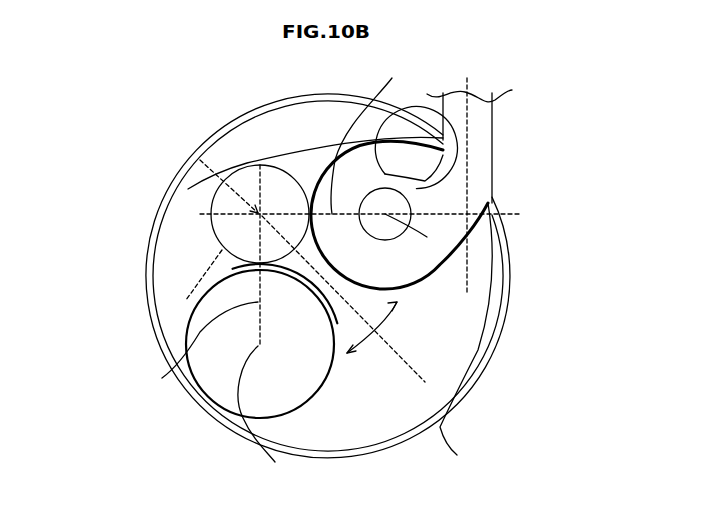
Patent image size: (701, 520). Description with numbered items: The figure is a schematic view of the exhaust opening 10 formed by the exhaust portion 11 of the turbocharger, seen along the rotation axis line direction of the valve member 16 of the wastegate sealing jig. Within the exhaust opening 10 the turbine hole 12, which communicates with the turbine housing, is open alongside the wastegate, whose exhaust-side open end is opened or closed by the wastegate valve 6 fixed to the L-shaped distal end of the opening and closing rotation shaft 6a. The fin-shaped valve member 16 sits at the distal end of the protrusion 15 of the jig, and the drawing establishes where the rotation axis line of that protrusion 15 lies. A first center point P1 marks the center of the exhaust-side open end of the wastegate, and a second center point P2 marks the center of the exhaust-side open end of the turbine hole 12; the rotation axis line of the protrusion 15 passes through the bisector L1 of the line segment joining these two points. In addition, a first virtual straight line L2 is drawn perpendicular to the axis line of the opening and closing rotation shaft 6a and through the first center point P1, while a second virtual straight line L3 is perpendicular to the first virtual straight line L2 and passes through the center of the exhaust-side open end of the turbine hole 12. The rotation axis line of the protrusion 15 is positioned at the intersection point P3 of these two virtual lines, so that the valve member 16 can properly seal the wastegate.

The exhaust opening 10 is at (215, 130).
The exhaust portion 11 is at (188, 162).
The turbine hole 12 is at (334, 345).
The protrusion 15 is at (218, 200).
The valve member 16 is at (277, 138).
The wastegate valve 6 is at (477, 358).
The opening and closing rotation shaft 6a is at (491, 124).
The first center point P1 is at (427, 237).
The second center point P2 is at (240, 428).
The intersection point P3 is at (200, 214).
The bisector L1 is at (466, 343).
The first virtual straight line L2 is at (364, 133).
The second virtual straight line L3 is at (194, 349).